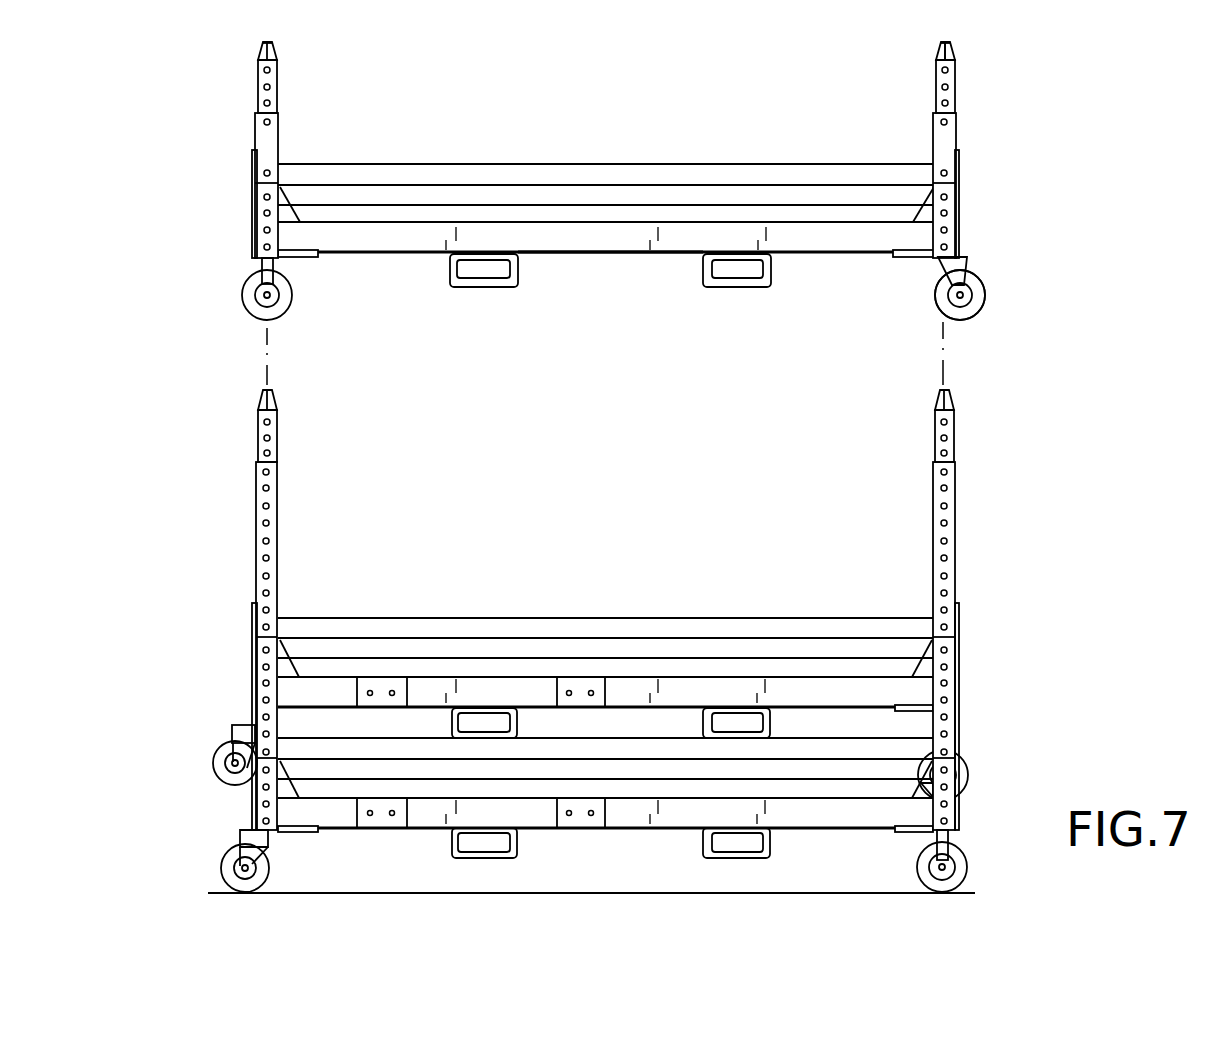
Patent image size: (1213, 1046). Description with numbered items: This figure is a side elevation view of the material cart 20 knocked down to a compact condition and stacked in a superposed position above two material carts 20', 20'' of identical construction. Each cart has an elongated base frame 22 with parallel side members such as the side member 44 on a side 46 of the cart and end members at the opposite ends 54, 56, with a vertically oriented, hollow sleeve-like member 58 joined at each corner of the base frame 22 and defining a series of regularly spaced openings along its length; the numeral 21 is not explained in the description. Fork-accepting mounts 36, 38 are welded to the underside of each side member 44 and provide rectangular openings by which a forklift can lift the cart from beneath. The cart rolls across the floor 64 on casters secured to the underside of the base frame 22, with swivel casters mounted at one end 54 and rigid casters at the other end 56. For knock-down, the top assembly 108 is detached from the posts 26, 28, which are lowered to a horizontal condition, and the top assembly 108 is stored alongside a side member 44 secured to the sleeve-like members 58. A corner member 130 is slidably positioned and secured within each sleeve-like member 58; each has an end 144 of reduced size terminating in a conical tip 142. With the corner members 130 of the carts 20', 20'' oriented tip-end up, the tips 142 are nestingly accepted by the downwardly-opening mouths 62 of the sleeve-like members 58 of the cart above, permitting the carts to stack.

The material cart 20 is at (606, 253).
The material cart 20' is at (651, 620).
The lowermost material cart 20'' is at (671, 801).
The bottom rail 21 is at (618, 253).
The base frame 22 is at (678, 254).
The post 26 is at (545, 638).
The post 28 is at (663, 658).
The fork-accepting mount 36 is at (452, 287).
The fork-accepting mount 38 is at (760, 287).
The side member 44 is at (551, 254).
The side of the cart 46 is at (597, 828).
The end of the cart 54 is at (593, 143).
The end of the cart 56 is at (252, 238).
The sleeve-like member 58 is at (255, 202).
The downwardly-opening mouth 62 is at (255, 263).
The floor 64 is at (822, 892).
The top assembly 108 is at (453, 164).
The corner member 130 is at (278, 98).
The tip 142 is at (262, 50).
The end of reduced size 144 is at (938, 45).